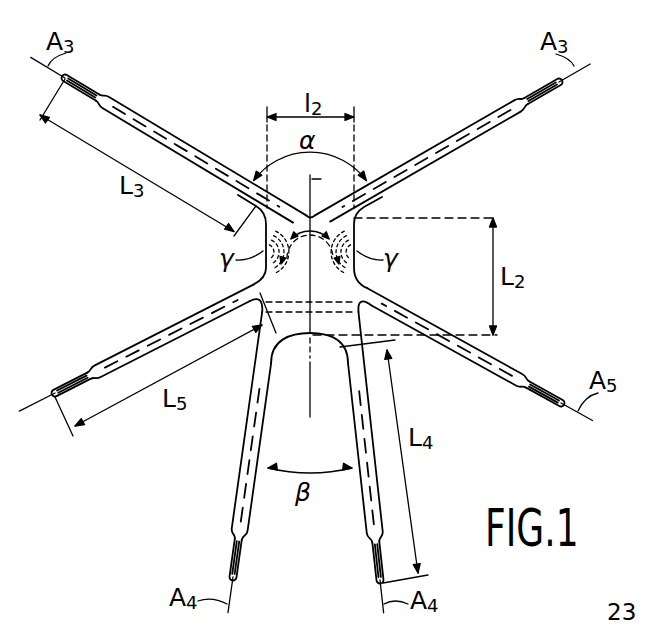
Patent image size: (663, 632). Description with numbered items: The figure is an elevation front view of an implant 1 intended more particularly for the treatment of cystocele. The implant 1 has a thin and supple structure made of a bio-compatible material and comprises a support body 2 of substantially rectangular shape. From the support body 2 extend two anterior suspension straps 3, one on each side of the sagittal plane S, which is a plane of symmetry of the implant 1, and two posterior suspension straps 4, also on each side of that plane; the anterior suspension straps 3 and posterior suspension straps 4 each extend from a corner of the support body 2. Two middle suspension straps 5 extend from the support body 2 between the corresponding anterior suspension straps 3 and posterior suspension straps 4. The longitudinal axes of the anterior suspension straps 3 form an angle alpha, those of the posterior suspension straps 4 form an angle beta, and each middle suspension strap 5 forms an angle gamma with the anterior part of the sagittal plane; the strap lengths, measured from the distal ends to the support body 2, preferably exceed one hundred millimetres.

The implant 1 is at (373, 108).
The support body 2 is at (318, 267).
The anterior suspension straps 3 is at (158, 127).
The posterior suspension straps 4 is at (242, 494).
The middle suspension straps 5 is at (163, 332).